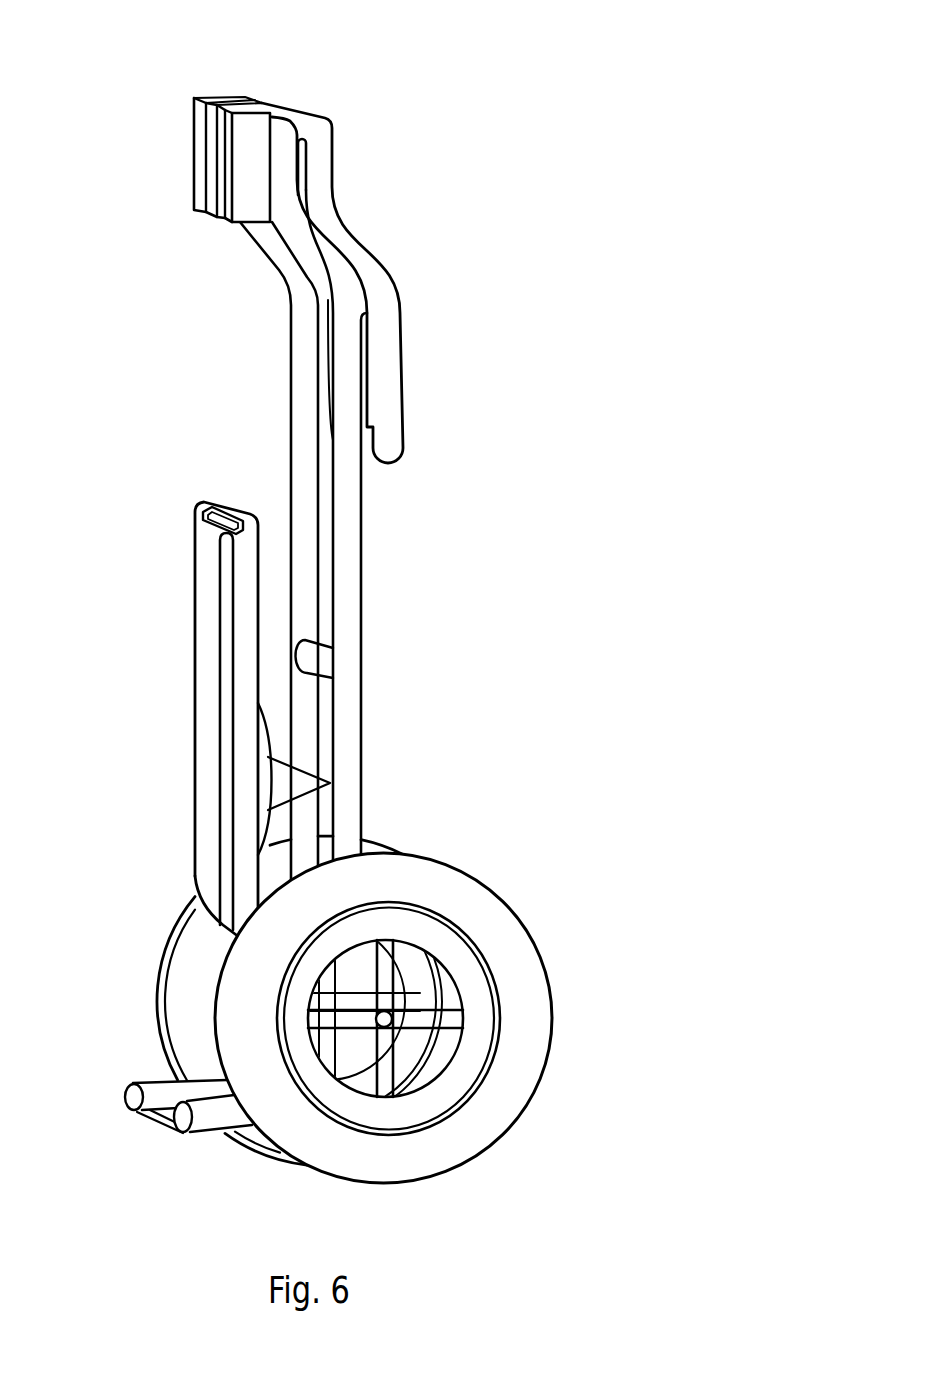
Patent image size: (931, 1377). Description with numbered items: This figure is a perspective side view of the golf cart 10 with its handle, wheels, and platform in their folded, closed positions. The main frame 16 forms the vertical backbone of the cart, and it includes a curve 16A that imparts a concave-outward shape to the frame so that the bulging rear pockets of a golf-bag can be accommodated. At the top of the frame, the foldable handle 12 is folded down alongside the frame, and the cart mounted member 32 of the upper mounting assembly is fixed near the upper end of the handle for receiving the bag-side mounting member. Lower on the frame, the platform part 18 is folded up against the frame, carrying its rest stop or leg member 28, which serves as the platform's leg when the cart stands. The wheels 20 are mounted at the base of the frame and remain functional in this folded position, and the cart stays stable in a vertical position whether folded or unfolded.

The golf cart 10 is at (725, 28).
The foldable handle 12 is at (318, 162).
The main frame 16 is at (307, 248).
The curve of main frame 16A is at (347, 307).
The platform part 18 is at (205, 713).
The wheels 20 is at (452, 893).
The rest stop or leg member 28 is at (207, 513).
The cart mounted member 32 is at (240, 145).